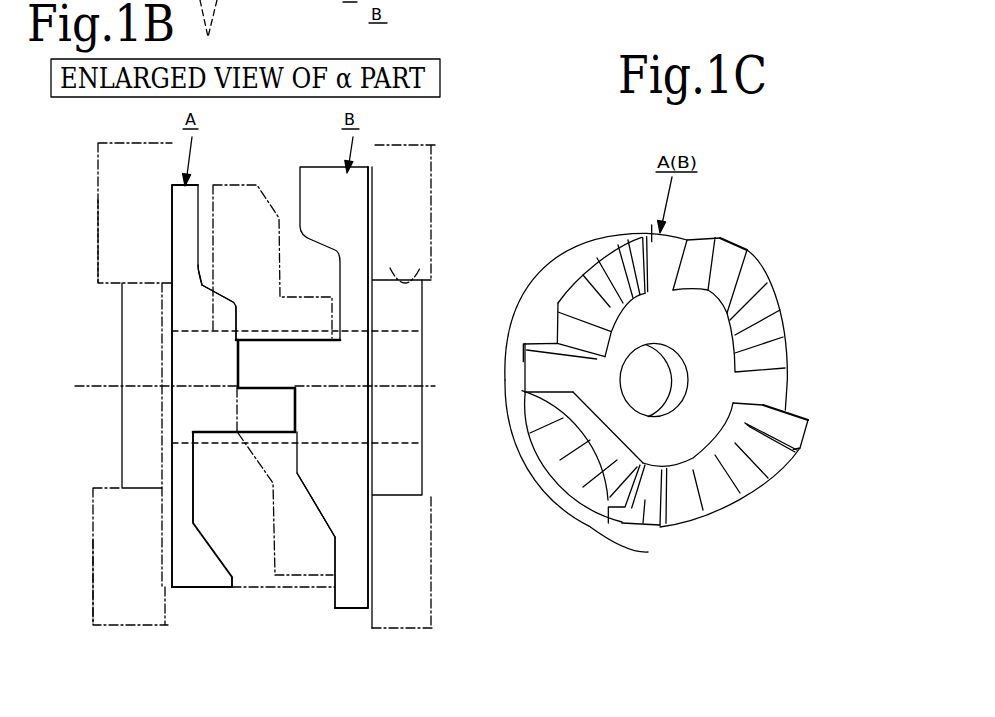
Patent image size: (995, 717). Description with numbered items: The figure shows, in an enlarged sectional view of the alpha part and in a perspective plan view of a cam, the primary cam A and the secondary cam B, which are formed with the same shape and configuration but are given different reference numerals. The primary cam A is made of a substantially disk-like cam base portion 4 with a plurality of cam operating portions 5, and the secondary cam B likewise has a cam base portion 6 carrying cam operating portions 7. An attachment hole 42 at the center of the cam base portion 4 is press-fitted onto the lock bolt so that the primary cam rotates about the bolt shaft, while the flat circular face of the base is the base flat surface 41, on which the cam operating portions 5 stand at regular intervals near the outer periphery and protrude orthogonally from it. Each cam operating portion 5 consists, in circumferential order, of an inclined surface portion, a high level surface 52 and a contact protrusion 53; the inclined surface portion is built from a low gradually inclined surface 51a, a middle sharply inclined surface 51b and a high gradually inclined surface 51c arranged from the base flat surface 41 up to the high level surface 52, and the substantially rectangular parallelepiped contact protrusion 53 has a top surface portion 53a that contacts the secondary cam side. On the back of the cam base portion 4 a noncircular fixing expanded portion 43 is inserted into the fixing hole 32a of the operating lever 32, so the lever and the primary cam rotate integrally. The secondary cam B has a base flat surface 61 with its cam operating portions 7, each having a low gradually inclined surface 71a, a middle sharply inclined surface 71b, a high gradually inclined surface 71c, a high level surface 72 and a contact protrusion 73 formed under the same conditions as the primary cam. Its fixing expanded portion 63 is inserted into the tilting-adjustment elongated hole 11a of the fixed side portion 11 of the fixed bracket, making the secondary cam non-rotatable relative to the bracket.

In FIG. 1C, the cam base portion 4 is at (513, 350).
In FIG. 1B, the cam operating portion 5 is at (219, 422).
In FIG. 1C, the cam operating portion 5 is at (718, 222).
In FIG. 1B, the cam base portion 6 is at (355, 617).
In FIG. 1B, the cam operating portion 7 is at (315, 348).
In FIG. 1B, the fixed side portion 11 is at (430, 617).
In FIG. 1B, the tilting-adjustment elongated hole 11a is at (433, 273).
In FIG. 1B, the operating lever 32 is at (103, 540).
In FIG. 1B, the fixing hole 32a is at (112, 285).
In FIG. 1B, the base flat surface 41 is at (197, 210).
In FIG. 1C, the base flat surface 41 is at (626, 201).
In FIG. 1C, the attachment hole 42 is at (638, 377).
In FIG. 1B, the fixing expanded portion 43 is at (122, 418).
In FIG. 1B, the low gradually inclined surface 51a is at (203, 266).
In FIG. 1C, the low gradually inclined surface 51a is at (545, 412).
In FIG. 1B, the middle sharply inclined surface 51b is at (220, 288).
In FIG. 1C, the middle sharply inclined surface 51b is at (575, 460).
In FIG. 1B, the high gradually inclined surface 51c is at (240, 320).
In FIG. 1C, the high gradually inclined surface 51c is at (568, 440).
In FIG. 1B, the high level surface 52 is at (240, 360).
In FIG. 1C, the high level surface 52 is at (570, 303).
In FIG. 1B, the contact protrusion 53 is at (282, 420).
In FIG. 1C, the contact protrusion 53 is at (723, 247).
In FIG. 1C, the top surface portion 53a is at (587, 337).
In FIG. 1B, the base flat surface 61 is at (335, 597).
In FIG. 1C, the fixing expanded portion 63 is at (500, 343).
In FIG. 1B, the low gradually inclined surface 71a is at (335, 552).
In FIG. 1B, the middle sharply inclined surface 71b is at (318, 503).
In FIG. 1B, the high gradually inclined surface 71c is at (290, 480).
In FIG. 1B, the high level surface 72 is at (293, 407).
In FIG. 1B, the contact protrusion 73 is at (262, 348).